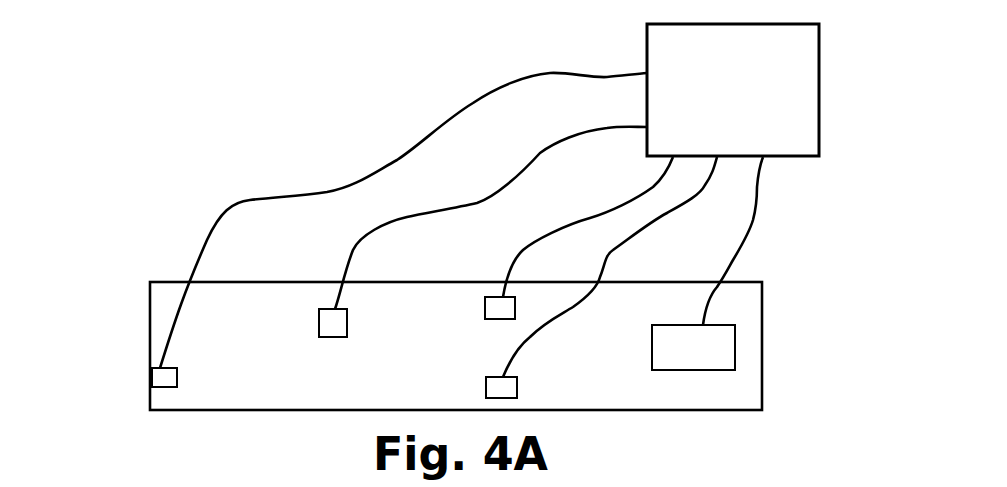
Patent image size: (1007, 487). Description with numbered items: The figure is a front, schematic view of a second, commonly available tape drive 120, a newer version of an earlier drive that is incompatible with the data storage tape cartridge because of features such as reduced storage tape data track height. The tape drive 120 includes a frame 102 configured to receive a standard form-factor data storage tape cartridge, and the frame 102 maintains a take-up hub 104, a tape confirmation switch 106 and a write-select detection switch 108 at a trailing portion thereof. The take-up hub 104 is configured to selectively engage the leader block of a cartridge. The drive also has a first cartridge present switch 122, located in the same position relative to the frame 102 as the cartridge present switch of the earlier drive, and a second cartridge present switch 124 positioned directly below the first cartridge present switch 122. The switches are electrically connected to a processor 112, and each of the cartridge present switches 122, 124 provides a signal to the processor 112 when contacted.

The frame 102 is at (147, 303).
The take-up hub 104 is at (716, 348).
The tape confirmation switch 106 is at (160, 375).
The write-select detection switch 108 is at (337, 327).
The processor 112 is at (807, 97).
The tape drive 120 is at (325, 113).
The first cartridge present switch 122 is at (493, 310).
The second cartridge present switch 124 is at (505, 387).